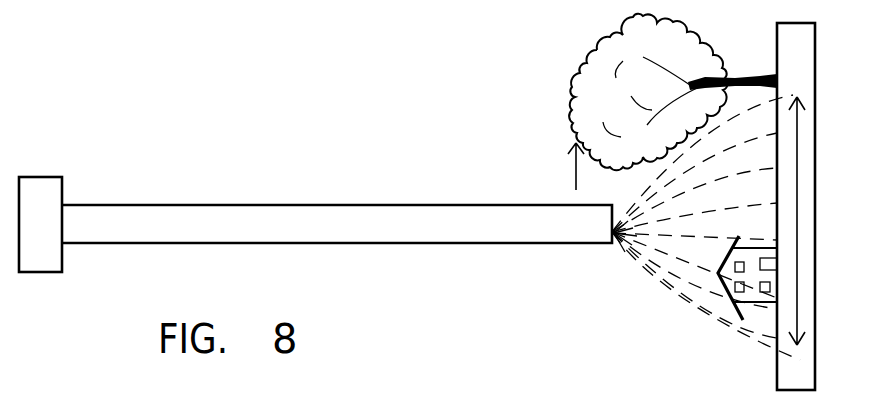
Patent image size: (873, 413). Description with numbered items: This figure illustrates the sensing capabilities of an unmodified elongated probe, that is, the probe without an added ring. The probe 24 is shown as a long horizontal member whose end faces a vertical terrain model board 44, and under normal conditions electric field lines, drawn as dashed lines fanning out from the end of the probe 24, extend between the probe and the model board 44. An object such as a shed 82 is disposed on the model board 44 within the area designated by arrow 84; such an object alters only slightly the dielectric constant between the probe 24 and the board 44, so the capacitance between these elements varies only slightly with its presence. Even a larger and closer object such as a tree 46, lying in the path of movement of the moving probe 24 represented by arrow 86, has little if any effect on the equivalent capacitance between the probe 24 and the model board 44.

The probe 24 is at (471, 232).
The terrain model board 44 is at (808, 46).
The tree 46 is at (590, 50).
The shed 82 is at (733, 302).
The arrow 84 is at (797, 195).
The arrow 86 is at (574, 168).